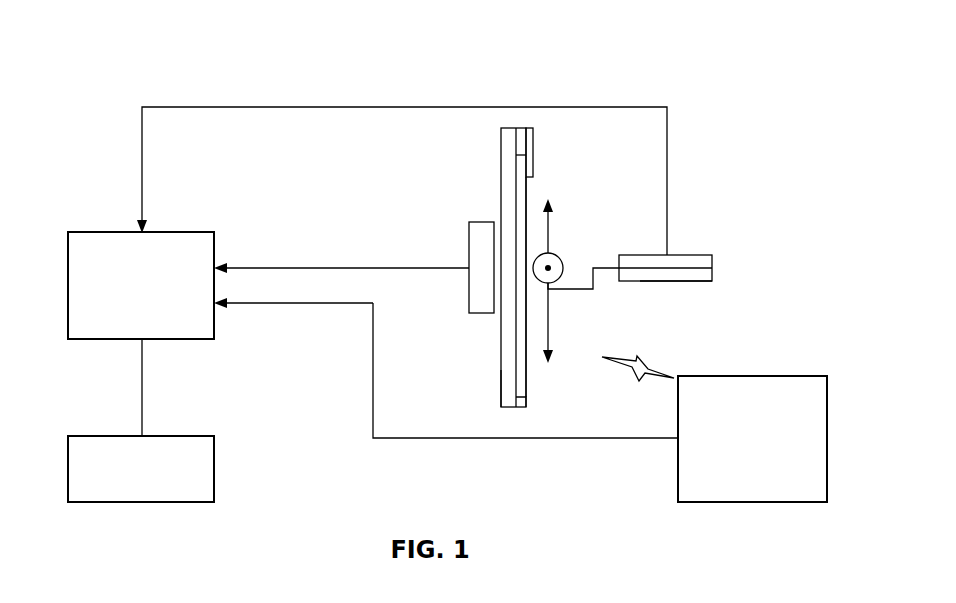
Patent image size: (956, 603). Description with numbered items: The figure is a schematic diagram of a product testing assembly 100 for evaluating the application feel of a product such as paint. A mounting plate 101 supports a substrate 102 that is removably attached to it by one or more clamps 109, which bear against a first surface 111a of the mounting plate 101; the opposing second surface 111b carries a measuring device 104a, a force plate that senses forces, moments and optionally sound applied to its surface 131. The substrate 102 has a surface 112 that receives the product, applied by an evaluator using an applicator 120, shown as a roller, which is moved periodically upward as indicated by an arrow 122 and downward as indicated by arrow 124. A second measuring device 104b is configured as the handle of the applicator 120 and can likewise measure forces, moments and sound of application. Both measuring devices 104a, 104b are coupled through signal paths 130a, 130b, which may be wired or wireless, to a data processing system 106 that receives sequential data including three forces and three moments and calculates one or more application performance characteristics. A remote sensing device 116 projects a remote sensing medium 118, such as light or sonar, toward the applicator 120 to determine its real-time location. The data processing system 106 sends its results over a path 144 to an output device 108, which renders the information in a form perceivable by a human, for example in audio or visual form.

The product testing assembly 100 is at (138, 43).
The mounting plate 101 is at (507, 128).
The substrate 102 is at (526, 197).
The measuring device 104a is at (469, 313).
The measuring device 104b is at (706, 255).
The data processing system 106 is at (130, 232).
The output device 108 is at (130, 436).
The clamp 109 is at (533, 152).
The first surface 111a is at (527, 397).
The second surface 111b is at (501, 386).
The surface 112 is at (527, 366).
The remote sensing device 116 is at (765, 376).
The remote sensing medium 118 is at (650, 363).
The applicator 120 is at (692, 289).
The arrow 122 is at (551, 225).
The arrow 124 is at (550, 322).
The signal path 130a is at (316, 268).
The signal path 130b is at (213, 107).
The surface 131 is at (497, 240).
The path 144 is at (142, 388).